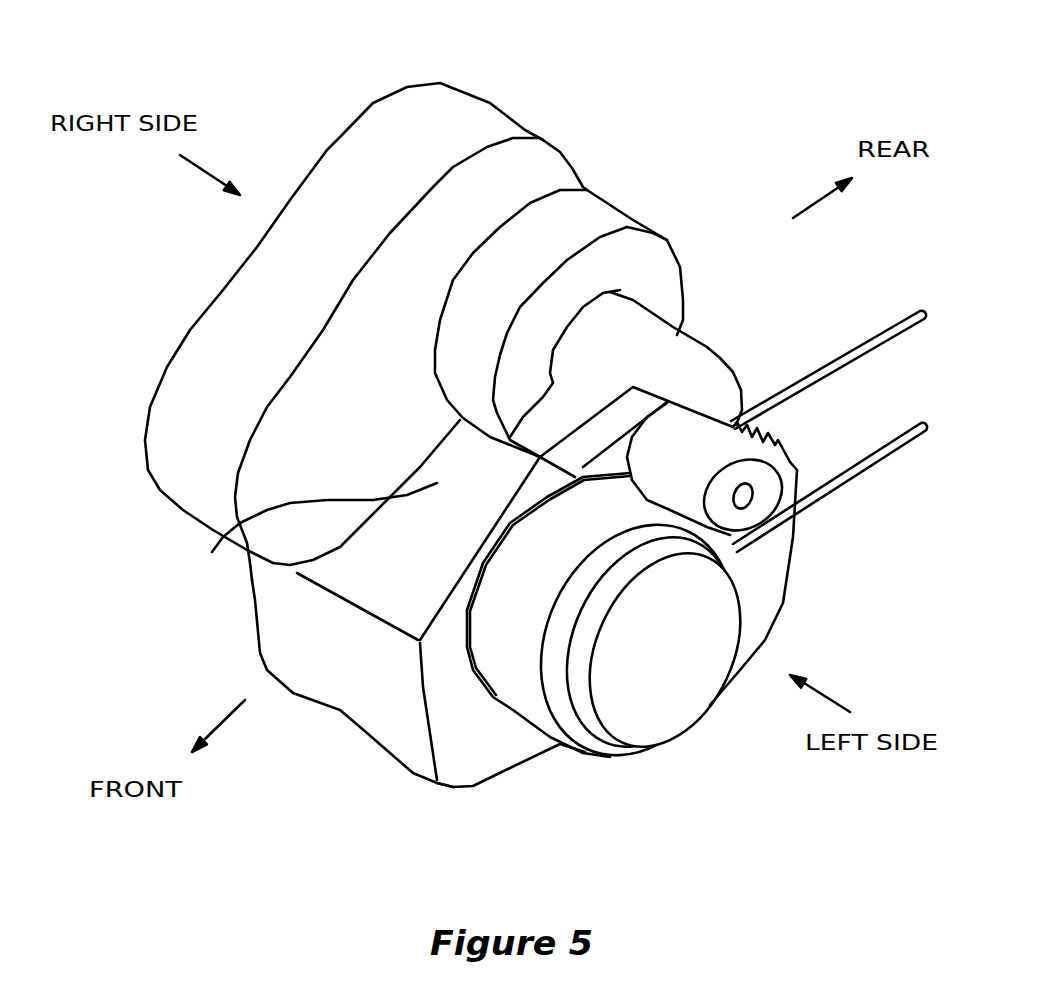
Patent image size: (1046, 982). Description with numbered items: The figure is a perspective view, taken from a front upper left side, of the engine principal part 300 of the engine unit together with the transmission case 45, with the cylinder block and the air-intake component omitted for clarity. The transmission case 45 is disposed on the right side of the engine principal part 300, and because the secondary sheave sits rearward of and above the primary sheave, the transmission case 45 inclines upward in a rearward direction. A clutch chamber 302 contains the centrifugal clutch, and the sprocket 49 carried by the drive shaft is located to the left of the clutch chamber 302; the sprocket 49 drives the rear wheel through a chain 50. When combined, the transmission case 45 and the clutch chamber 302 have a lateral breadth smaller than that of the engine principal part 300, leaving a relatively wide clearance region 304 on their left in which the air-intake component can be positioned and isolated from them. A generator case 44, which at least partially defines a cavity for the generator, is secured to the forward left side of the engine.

The transmission case 45 is at (498, 105).
The clutch chamber 302 is at (667, 240).
The clearance region 304 is at (212, 552).
The engine principal part 300 is at (388, 703).
The sprocket 49 is at (790, 433).
The chain 50 is at (857, 342).
The generator case 44 is at (667, 697).